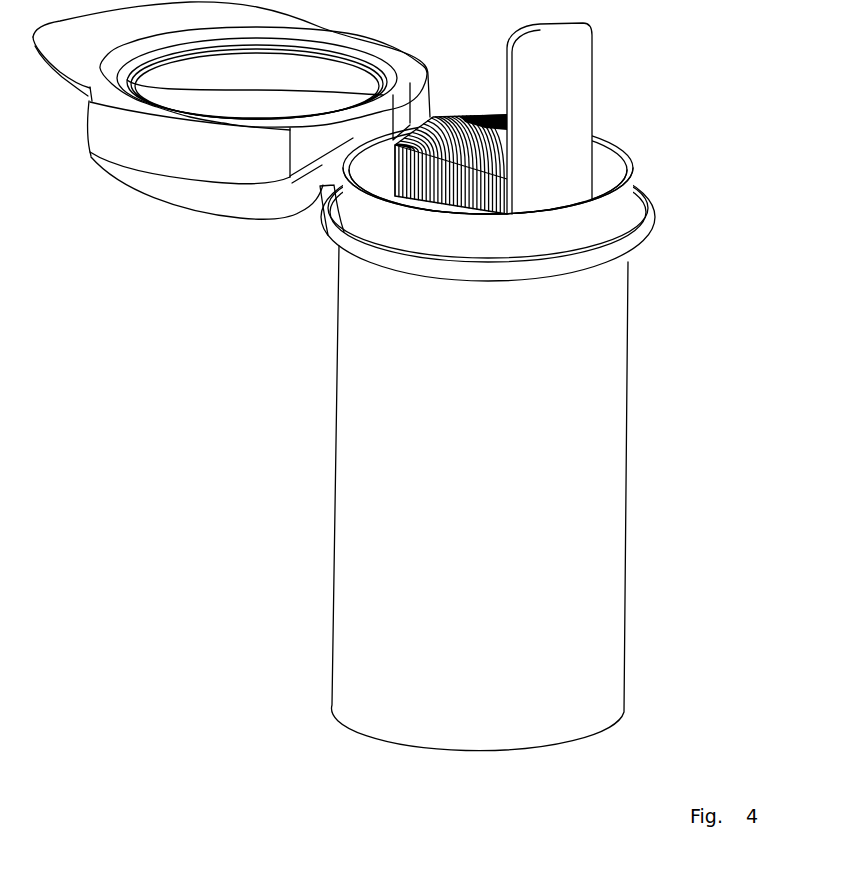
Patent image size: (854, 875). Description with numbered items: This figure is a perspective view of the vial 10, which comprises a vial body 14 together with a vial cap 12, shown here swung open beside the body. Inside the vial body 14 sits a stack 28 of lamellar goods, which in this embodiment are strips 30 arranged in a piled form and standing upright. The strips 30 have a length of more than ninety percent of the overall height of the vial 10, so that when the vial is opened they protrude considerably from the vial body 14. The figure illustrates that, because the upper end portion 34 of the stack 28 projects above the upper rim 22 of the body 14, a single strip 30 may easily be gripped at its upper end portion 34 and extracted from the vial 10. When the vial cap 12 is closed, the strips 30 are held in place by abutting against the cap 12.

The vial 10 is at (358, 376).
The vial cap 12 is at (113, 143).
The vial body 14 is at (360, 467).
The upper rim 22 is at (336, 231).
The stack 28 is at (436, 115).
The strip 30 is at (567, 97).
The upper end portion 34 is at (355, 227).